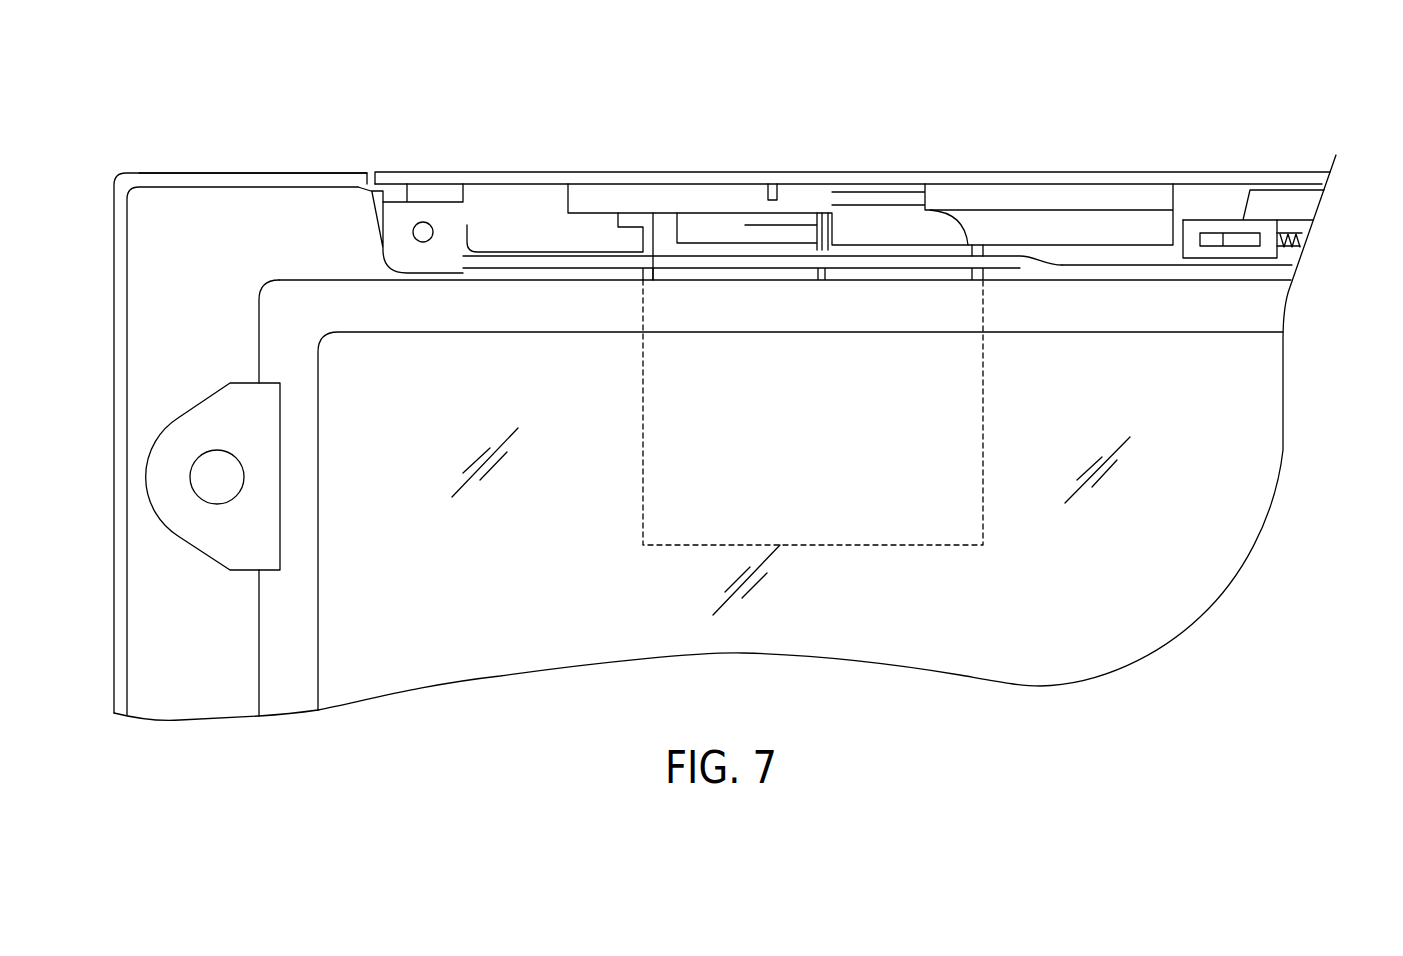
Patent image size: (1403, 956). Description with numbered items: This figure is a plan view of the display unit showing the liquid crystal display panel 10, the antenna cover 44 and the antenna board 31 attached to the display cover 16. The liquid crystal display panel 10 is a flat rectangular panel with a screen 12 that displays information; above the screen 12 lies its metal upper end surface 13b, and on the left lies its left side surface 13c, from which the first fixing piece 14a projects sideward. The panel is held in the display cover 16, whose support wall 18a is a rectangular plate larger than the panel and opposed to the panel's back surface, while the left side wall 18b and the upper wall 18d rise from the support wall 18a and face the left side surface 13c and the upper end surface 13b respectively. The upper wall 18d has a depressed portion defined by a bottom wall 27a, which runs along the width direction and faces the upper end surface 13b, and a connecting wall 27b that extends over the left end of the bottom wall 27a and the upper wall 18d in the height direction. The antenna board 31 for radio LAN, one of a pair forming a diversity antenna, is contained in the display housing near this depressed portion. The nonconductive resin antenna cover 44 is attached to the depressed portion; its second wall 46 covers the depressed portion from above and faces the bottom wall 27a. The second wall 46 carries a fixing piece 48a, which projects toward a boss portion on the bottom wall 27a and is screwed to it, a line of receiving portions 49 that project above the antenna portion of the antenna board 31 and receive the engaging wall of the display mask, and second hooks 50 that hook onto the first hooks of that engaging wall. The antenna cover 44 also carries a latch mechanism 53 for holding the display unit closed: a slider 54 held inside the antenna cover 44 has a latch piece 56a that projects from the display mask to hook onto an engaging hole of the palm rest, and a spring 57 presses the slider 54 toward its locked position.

The liquid crystal display panel 10 is at (1250, 523).
The screen 12 is at (791, 524).
The upper end surface 13b is at (883, 274).
The left side surface 13c is at (259, 602).
The first fixing piece 14a is at (196, 420).
The display cover 16 is at (115, 418).
The support wall 18a is at (193, 715).
The left side wall 18b is at (120, 641).
The upper wall 18d is at (237, 172).
The bottom wall 27a is at (1020, 265).
The connecting wall 27b is at (373, 205).
The antenna board 31 is at (930, 546).
The antenna cover 44 is at (1212, 168).
The second wall 46 is at (882, 178).
The fixing piece 48a is at (441, 258).
The receiving portion 49 is at (633, 193).
The second hook 50 is at (770, 195).
The latch mechanism 53 is at (1243, 265).
The slider 54 is at (1309, 200).
The latch piece 56a is at (1212, 244).
The spring 57 is at (1300, 240).